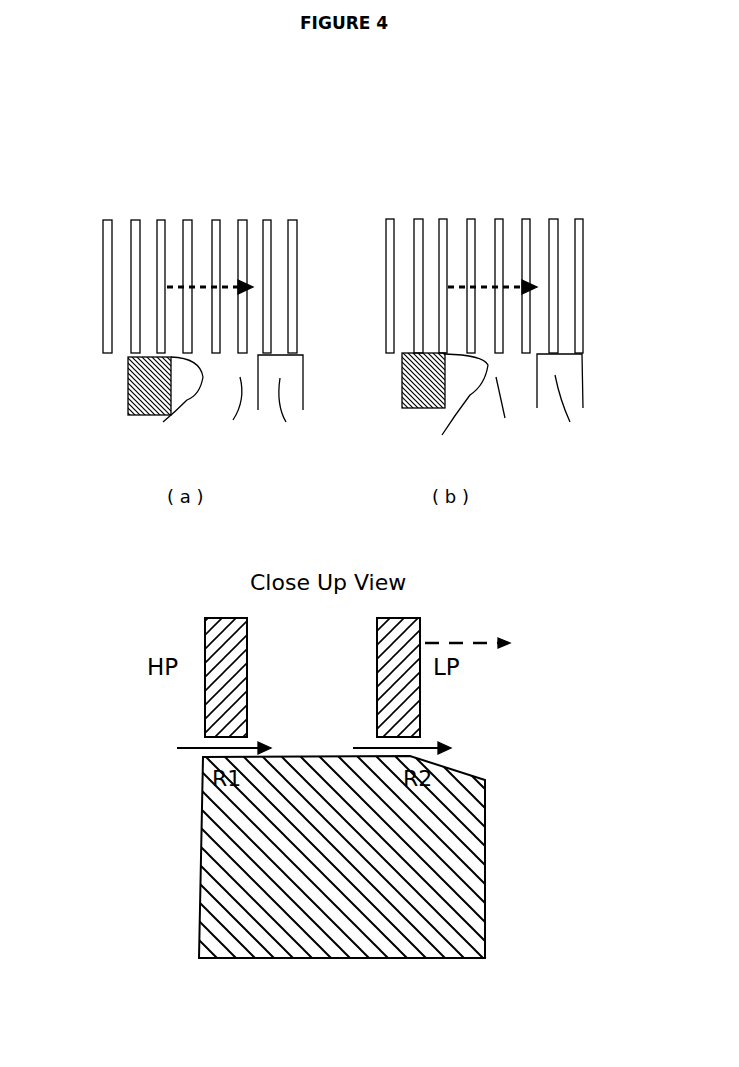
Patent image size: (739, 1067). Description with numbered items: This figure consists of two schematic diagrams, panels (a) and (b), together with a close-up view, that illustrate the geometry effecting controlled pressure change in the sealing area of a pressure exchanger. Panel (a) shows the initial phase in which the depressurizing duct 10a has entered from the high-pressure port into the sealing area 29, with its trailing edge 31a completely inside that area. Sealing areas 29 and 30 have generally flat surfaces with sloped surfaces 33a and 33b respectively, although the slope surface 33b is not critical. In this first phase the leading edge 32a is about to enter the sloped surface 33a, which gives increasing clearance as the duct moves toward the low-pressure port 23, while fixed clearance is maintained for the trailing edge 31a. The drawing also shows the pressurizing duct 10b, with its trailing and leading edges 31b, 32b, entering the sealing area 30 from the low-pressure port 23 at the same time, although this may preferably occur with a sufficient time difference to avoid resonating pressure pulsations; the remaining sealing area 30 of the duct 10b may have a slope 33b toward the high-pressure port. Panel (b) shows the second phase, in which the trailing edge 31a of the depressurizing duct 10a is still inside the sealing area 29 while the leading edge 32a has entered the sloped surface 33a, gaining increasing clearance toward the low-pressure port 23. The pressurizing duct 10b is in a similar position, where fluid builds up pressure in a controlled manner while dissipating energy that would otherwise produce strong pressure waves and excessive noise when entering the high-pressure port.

The depressurizing duct 10a is at (147, 260).
The pressurizing duct 10b is at (280, 247).
The trailing edge 31a is at (135, 223).
The leading edge 32a is at (160, 220).
The trailing edge 31b is at (263, 217).
The leading edge 32b is at (292, 223).
The sealing area 29 is at (128, 390).
The sloped surface 33a is at (523, 755).
The sloped surface 33b is at (303, 353).
The low-pressure port 23 is at (366, 414).
The sealing area 30 is at (432, 402).